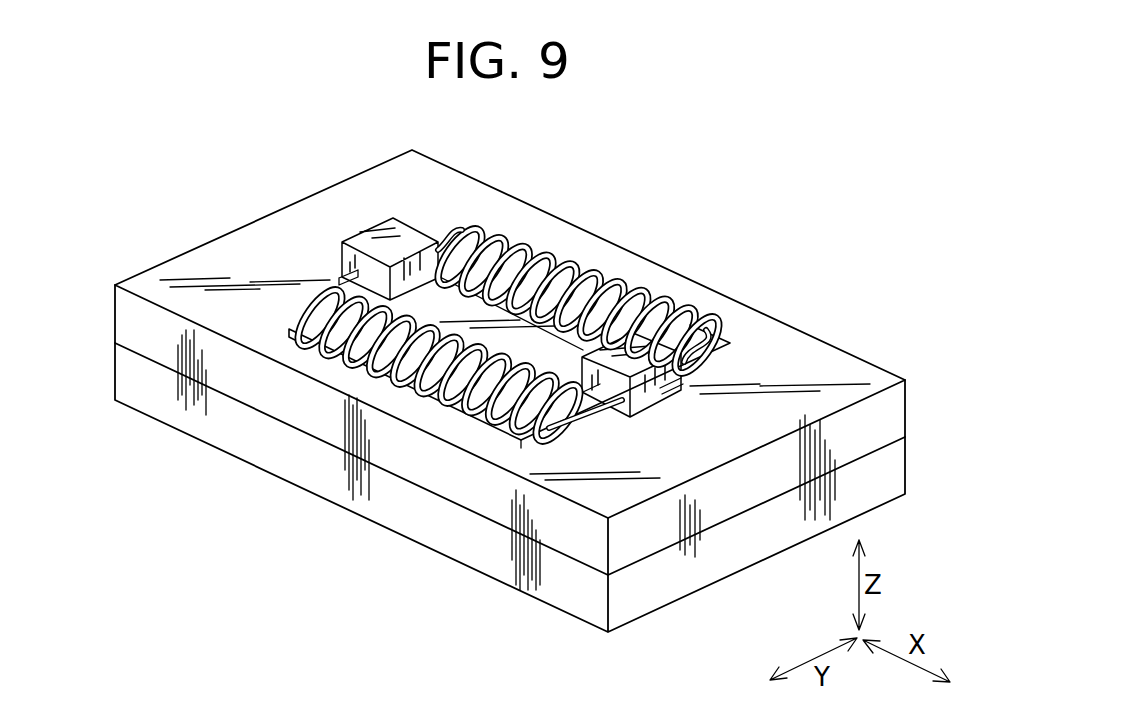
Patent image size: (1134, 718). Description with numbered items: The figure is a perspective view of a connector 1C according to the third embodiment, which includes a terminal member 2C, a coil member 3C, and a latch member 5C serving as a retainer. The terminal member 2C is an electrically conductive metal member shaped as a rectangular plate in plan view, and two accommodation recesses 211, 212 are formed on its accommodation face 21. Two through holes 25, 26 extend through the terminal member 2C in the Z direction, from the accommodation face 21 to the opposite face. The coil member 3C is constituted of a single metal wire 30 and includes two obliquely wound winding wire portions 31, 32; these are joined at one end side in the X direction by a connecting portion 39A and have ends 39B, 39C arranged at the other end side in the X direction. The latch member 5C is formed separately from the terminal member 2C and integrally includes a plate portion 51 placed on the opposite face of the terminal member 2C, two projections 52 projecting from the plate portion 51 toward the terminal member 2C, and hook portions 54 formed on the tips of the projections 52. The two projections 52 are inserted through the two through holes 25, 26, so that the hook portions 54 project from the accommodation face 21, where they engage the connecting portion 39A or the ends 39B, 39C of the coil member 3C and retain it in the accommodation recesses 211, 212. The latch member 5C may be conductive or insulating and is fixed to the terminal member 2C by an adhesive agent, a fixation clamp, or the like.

The connector 1C is at (795, 197).
The terminal member 2C is at (887, 413).
The latch member 5C is at (887, 470).
The coil member 3C is at (507, 371).
The accommodation face 21 is at (218, 262).
The through hole 25 is at (343, 268).
The through hole 26 is at (680, 395).
The wire 30 is at (578, 253).
The winding wire portion 31 is at (417, 387).
The winding wire portion 32 is at (593, 277).
The connecting portion 39A is at (448, 223).
The end 39B is at (613, 403).
The end 39C is at (585, 414).
The plate portion 51 is at (153, 388).
The projection 52 is at (332, 340).
The hook portion 54 is at (353, 255).
The accommodation recess 211 is at (297, 318).
The accommodation recess 212 is at (523, 253).